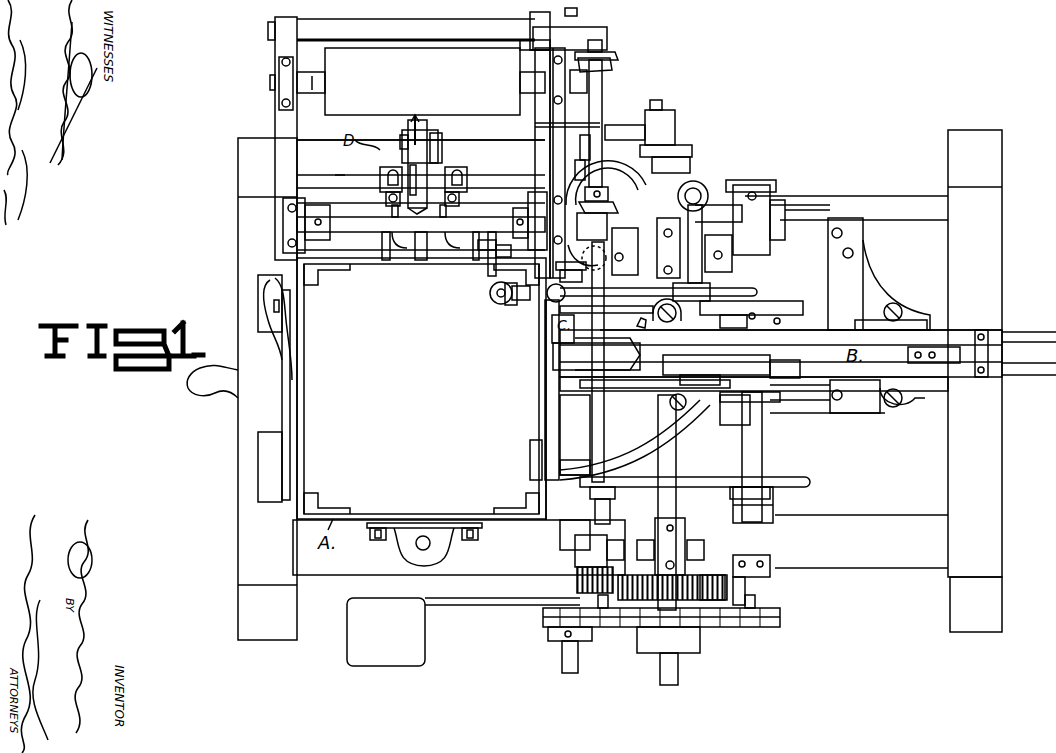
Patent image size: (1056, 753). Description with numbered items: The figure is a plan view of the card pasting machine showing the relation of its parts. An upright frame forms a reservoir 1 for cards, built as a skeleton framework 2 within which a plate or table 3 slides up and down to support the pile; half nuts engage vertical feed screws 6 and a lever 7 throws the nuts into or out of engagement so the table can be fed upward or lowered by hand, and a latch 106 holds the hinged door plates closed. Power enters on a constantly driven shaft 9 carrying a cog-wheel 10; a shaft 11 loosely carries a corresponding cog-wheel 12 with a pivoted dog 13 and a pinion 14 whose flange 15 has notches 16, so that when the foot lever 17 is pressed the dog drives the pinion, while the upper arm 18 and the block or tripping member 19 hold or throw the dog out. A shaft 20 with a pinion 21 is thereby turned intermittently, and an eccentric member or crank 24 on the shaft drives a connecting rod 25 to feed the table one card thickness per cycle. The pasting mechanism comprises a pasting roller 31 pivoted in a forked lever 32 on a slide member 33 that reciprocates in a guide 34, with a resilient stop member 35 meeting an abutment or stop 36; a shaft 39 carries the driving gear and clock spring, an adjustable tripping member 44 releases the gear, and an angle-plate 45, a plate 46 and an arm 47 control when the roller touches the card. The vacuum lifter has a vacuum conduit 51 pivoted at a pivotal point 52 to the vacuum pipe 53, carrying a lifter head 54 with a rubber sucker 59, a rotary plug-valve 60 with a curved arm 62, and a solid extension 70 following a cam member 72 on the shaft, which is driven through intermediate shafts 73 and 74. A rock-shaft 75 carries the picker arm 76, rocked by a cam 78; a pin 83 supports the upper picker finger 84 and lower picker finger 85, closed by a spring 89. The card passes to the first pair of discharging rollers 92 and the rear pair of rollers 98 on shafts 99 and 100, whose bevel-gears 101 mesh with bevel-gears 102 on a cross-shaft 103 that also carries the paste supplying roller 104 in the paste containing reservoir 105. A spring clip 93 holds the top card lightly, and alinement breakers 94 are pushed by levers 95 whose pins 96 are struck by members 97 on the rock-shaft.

The reservoir 1 is at (421, 388).
The skeleton framework 2 is at (340, 272).
The plate or table 3 is at (529, 410).
The vertical feed screws 6 is at (430, 548).
The lever 7 is at (195, 388).
The shaft 9 is at (569, 674).
The cog-wheel 10 is at (548, 630).
The shaft 11 is at (676, 462).
The cog-wheel 12 is at (661, 628).
The dog 13 is at (640, 600).
The pinion 14 is at (722, 575).
The flange 15 is at (740, 598).
The notches 16 is at (687, 590).
The foot lever 17 is at (417, 613).
The upper arm 18 is at (603, 612).
The block or tripping member 19 is at (748, 570).
The shaft 20 is at (591, 551).
The pinion 21 is at (580, 575).
The eccentric member or crank 24 is at (672, 148).
The connecting rod 25 is at (498, 133).
The pasting roller 31 is at (556, 355).
The forked lever 32 is at (740, 320).
The slide member 33 is at (781, 353).
The guide 34 is at (1025, 332).
The resilient stop member 35 is at (958, 347).
The abutment or stop 36 is at (990, 352).
The shaft 39 is at (758, 458).
The adjustable tripping member 44 is at (782, 324).
The angle-plate 45 is at (786, 372).
The plate 46 is at (740, 362).
The arm 47 is at (596, 354).
The vacuum conduit 51 is at (686, 260).
The pivotal point 52 is at (676, 310).
The vacuum pipe 53 is at (696, 192).
The lifter head 54 is at (512, 306).
The rubber sucker 59 is at (490, 296).
The rotary plug-valve 60 is at (551, 300).
The curved arm 62 is at (520, 238).
The solid extension 70 is at (757, 293).
The cam member 72 is at (800, 308).
The intermediate shaft 73 is at (581, 247).
The intermediate shaft 74 is at (646, 258).
The rock-shaft 75 is at (338, 176).
The picker arm 76 is at (405, 152).
The cam 78 is at (606, 183).
The pin 83 is at (403, 140).
The upper picker finger 84 is at (385, 175).
The lower picker finger 85 is at (430, 171).
The spring 89 is at (412, 120).
The first pair of discharging rollers 92 is at (303, 200).
The spring clip 93 is at (473, 290).
The alinement breakers 94 is at (386, 276).
The levers 95 is at (385, 212).
The pins 96 is at (382, 188).
The members 97 is at (424, 214).
The rear pair of rollers 98 is at (422, 81).
The shaft 99 is at (421, 236).
The shaft 100 is at (526, 80).
The bevel-gears 101 is at (592, 88).
The bevel-gears 102 is at (612, 58).
The cross-shaft 103 is at (604, 105).
The paste supplying roller 104 is at (640, 346).
The paste containing reservoir 105 is at (556, 415).
The latch 106 is at (282, 362).